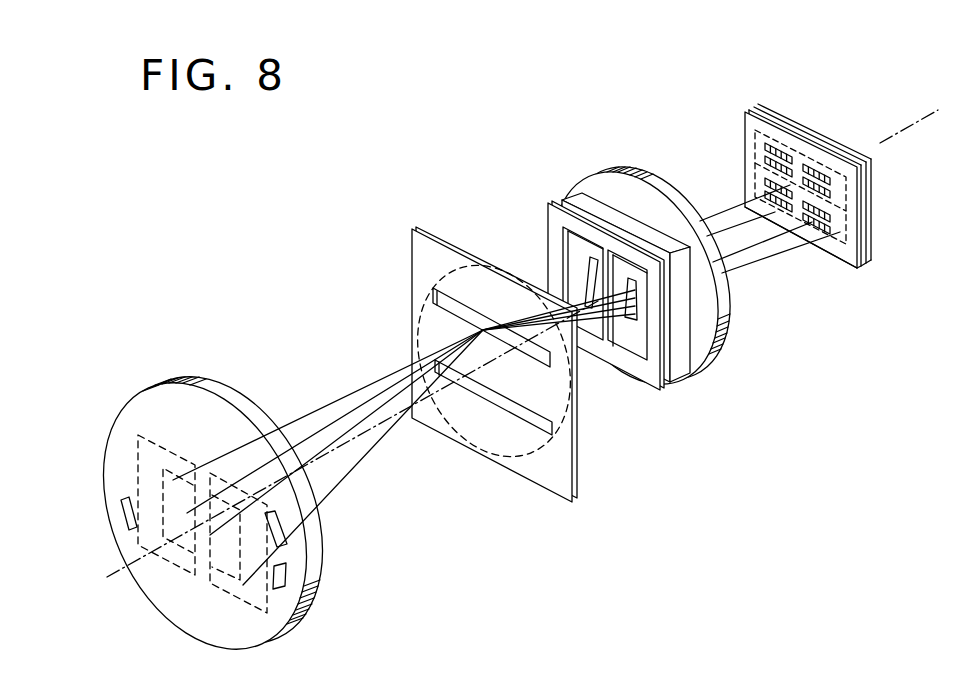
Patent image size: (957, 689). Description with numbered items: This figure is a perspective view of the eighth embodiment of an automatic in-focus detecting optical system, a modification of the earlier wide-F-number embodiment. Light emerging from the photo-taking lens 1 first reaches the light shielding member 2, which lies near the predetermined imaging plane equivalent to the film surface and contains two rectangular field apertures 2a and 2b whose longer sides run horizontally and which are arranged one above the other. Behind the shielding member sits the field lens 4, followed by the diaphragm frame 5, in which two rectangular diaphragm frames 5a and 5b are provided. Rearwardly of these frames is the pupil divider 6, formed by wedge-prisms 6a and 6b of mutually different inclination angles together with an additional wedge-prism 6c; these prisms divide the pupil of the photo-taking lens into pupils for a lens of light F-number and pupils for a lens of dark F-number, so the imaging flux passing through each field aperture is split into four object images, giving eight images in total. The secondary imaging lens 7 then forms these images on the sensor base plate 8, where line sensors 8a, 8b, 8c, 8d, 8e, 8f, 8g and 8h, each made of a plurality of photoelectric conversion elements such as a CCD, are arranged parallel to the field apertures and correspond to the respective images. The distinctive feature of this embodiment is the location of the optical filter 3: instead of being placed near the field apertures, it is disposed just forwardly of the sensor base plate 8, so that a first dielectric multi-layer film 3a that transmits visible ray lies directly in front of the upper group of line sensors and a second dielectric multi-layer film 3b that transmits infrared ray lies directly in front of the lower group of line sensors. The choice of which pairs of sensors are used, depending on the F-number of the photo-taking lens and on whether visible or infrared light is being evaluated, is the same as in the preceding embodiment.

The photo-taking lens 1 is at (189, 392).
The light shielding member 2 is at (422, 266).
The field aperture 2a is at (437, 358).
The field aperture 2b is at (426, 296).
The optical filter 3 is at (745, 117).
The first dielectric multi-layer film 3a is at (762, 132).
The second dielectric multi-layer film 3b is at (827, 243).
The field lens 4 is at (445, 264).
The diaphragm frame 5 is at (549, 218).
The diaphragm frame 5a is at (568, 245).
The diaphragm frame 5b is at (637, 368).
The pupil divider 6 is at (578, 200).
The wedge-prism 6a is at (578, 272).
The wedge-prism 6b is at (672, 332).
The wedge-prism 6c is at (623, 318).
The secondary imaging lens 7 is at (607, 185).
The sensor base plate 8 is at (843, 150).
The line sensor 8a is at (788, 152).
The line sensor 8b is at (836, 181).
The line sensor 8c is at (763, 158).
The line sensor 8d is at (836, 194).
The line sensor 8e is at (765, 184).
The line sensor 8f is at (836, 223).
The line sensor 8g is at (777, 205).
The line sensor 8h is at (836, 231).